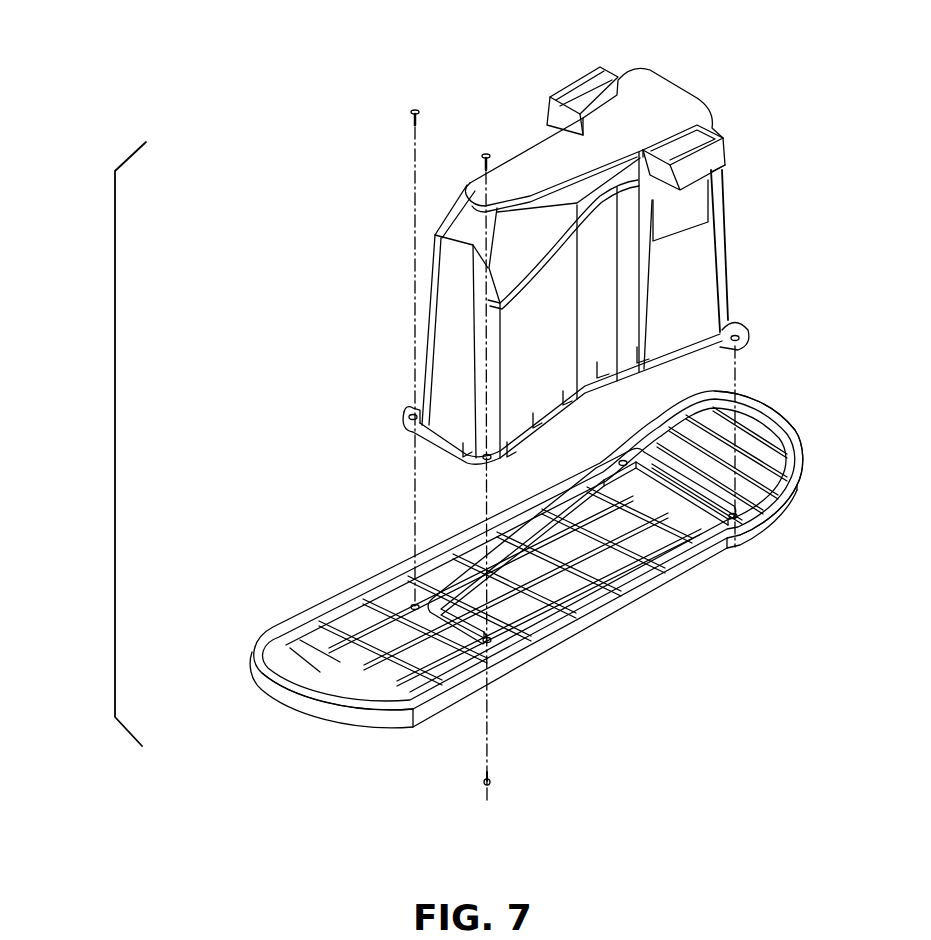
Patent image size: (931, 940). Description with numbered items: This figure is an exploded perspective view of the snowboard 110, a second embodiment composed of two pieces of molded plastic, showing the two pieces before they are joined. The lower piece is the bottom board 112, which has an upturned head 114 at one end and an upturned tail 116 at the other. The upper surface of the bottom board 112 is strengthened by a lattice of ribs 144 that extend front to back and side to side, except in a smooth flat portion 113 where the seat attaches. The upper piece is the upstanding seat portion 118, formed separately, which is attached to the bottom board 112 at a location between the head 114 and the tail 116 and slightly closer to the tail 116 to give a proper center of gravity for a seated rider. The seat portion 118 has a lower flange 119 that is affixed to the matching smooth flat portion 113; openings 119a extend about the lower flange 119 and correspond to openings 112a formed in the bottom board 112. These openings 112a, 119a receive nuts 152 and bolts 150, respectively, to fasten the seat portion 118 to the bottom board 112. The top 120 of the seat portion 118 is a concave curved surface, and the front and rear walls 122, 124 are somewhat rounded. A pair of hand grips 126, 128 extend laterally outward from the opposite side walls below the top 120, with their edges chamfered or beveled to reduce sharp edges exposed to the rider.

The snowboard 110 is at (115, 443).
The bottom board 112 is at (560, 637).
The openings 112a is at (623, 460).
The smooth flat portion 113 is at (640, 548).
The upturned head 114 is at (275, 691).
The upturned tail 116 is at (786, 410).
The seat portion 118 is at (727, 203).
The lower flange 119 is at (438, 452).
The openings 119a is at (410, 415).
The top 120 is at (594, 140).
The front wall 122 is at (455, 312).
The rear wall 124 is at (725, 263).
The hand grip 126 is at (728, 142).
The hand grip 128 is at (570, 74).
The lattice of ribs 144 is at (350, 593).
The bolts 150 is at (412, 108).
The nuts 152 is at (483, 788).